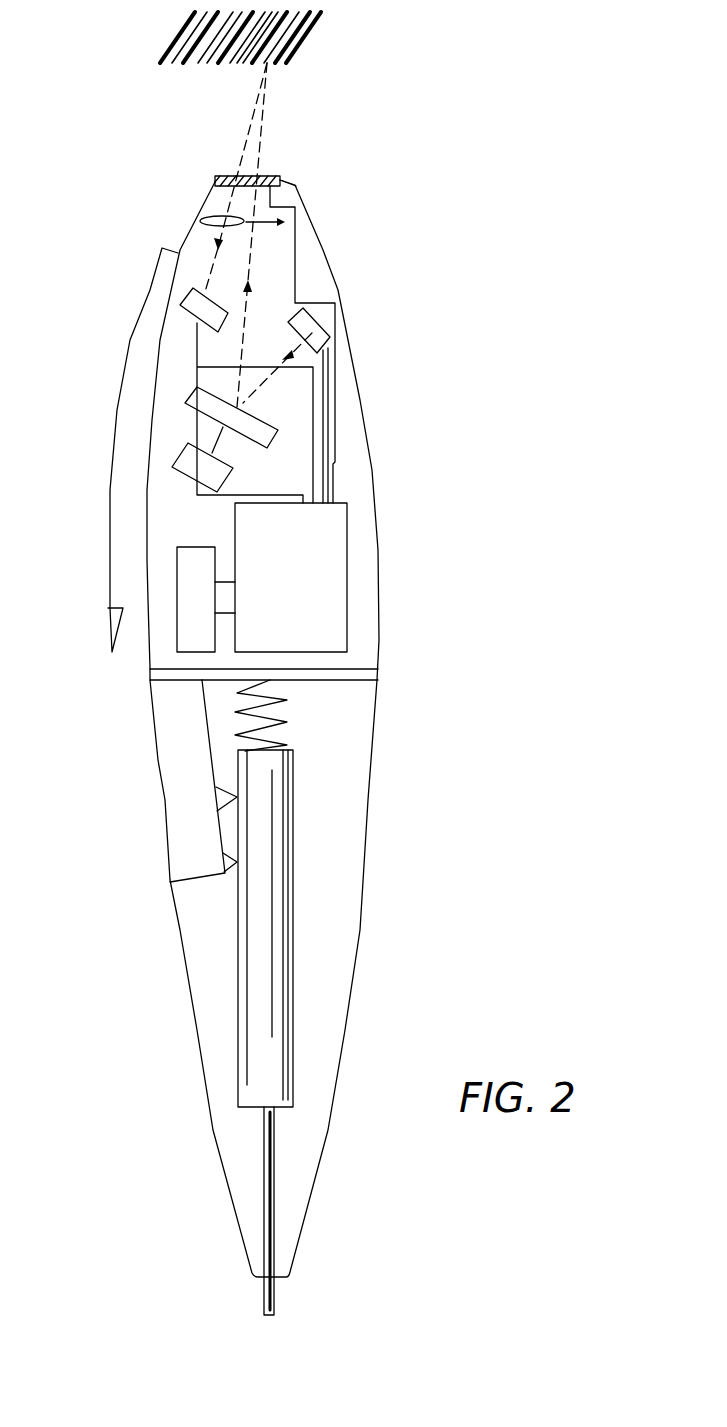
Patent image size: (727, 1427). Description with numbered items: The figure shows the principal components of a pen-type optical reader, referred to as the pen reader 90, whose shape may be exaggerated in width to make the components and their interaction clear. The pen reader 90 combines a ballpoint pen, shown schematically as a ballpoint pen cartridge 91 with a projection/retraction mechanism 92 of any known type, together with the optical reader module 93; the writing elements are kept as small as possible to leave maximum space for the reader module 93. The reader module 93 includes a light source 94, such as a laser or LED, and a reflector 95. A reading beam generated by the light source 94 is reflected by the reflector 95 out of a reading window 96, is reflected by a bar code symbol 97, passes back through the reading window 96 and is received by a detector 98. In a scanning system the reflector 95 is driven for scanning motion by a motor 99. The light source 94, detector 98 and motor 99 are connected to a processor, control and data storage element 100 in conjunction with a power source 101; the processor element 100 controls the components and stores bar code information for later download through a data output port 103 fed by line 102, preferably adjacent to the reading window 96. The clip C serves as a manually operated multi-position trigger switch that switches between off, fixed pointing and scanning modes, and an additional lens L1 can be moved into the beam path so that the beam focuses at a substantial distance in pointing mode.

The pen reader 90 is at (450, 641).
The ballpoint pen cartridge 91 is at (268, 1002).
The projection/retraction mechanism 92 is at (172, 729).
The reader module 93 is at (380, 403).
The light source 94 is at (318, 338).
The reflector 95 is at (197, 390).
The reading window 96 is at (276, 176).
The bar code symbol 97 is at (293, 47).
The detector 98 is at (180, 303).
The motor 99 is at (177, 460).
The processor, control and data storage element 100 is at (304, 590).
The power source 101 is at (206, 615).
The line 102 is at (340, 447).
The data output port 103 is at (288, 181).
The clip C is at (118, 411).
The lens L1 is at (200, 218).